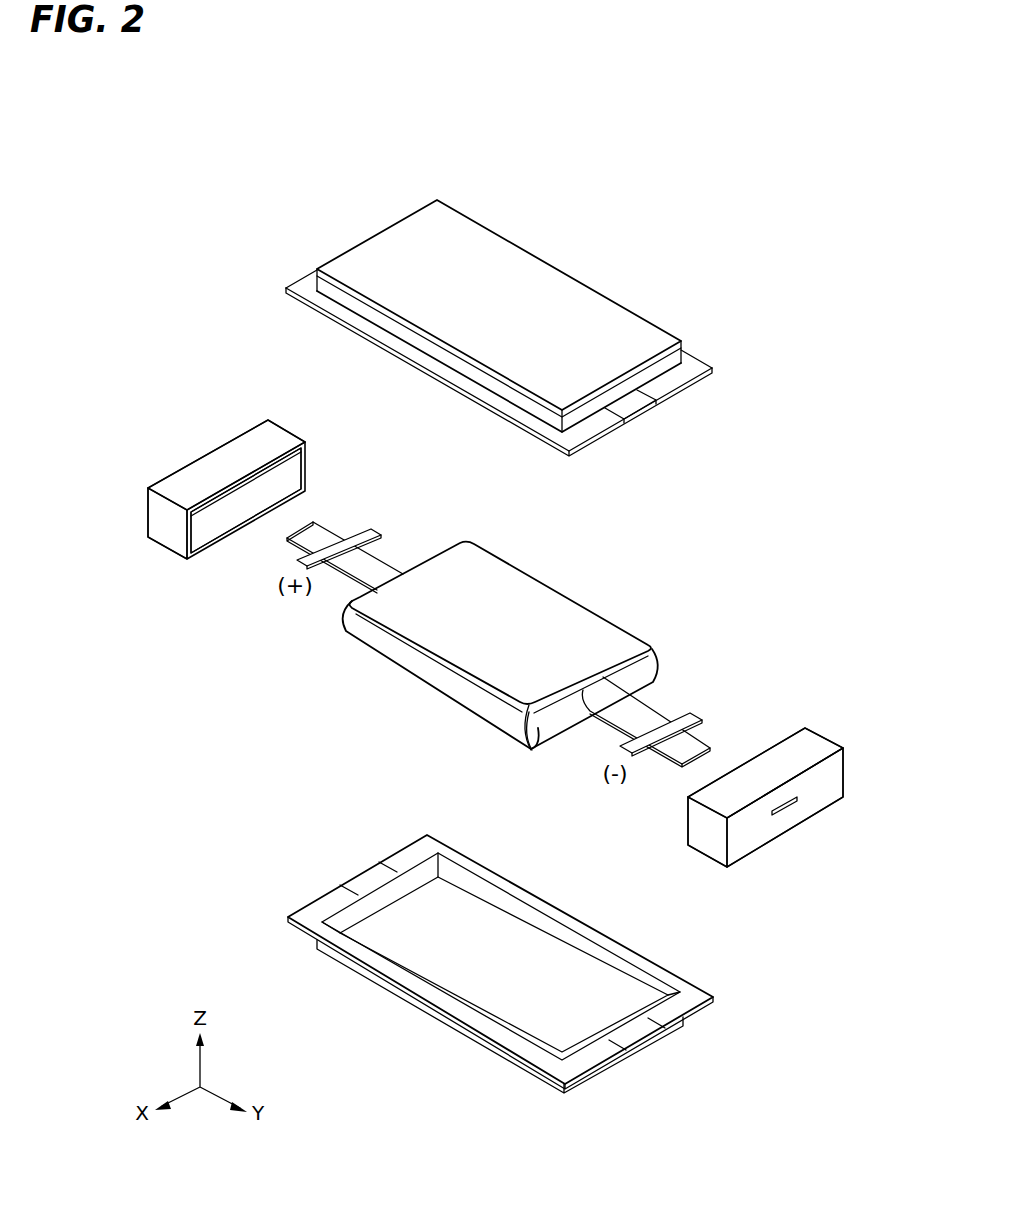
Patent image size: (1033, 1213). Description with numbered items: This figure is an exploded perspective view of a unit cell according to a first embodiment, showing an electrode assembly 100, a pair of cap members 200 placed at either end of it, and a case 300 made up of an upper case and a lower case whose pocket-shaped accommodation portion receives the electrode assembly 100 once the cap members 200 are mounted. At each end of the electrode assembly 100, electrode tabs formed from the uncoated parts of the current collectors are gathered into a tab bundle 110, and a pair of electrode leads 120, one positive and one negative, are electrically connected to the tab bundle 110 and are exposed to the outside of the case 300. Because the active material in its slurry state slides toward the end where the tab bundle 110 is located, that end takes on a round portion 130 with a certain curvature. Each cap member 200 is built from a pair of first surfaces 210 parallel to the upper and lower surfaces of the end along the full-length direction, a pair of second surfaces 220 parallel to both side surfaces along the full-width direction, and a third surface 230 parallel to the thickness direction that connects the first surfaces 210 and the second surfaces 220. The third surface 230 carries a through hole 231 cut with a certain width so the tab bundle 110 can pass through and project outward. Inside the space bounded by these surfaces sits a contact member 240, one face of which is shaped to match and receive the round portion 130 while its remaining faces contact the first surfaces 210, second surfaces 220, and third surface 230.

The electrode assembly 100 is at (570, 620).
The tab bundle 110 is at (633, 715).
The electrode leads 120 is at (692, 747).
The round portion 130 is at (533, 745).
The cap member 200 is at (287, 441).
The first surfaces 210 is at (220, 460).
The second surfaces 220 is at (160, 517).
The third surface 230 is at (828, 797).
The through hole 231 is at (788, 815).
The contact member 240 is at (224, 524).
The case 300 is at (568, 232).